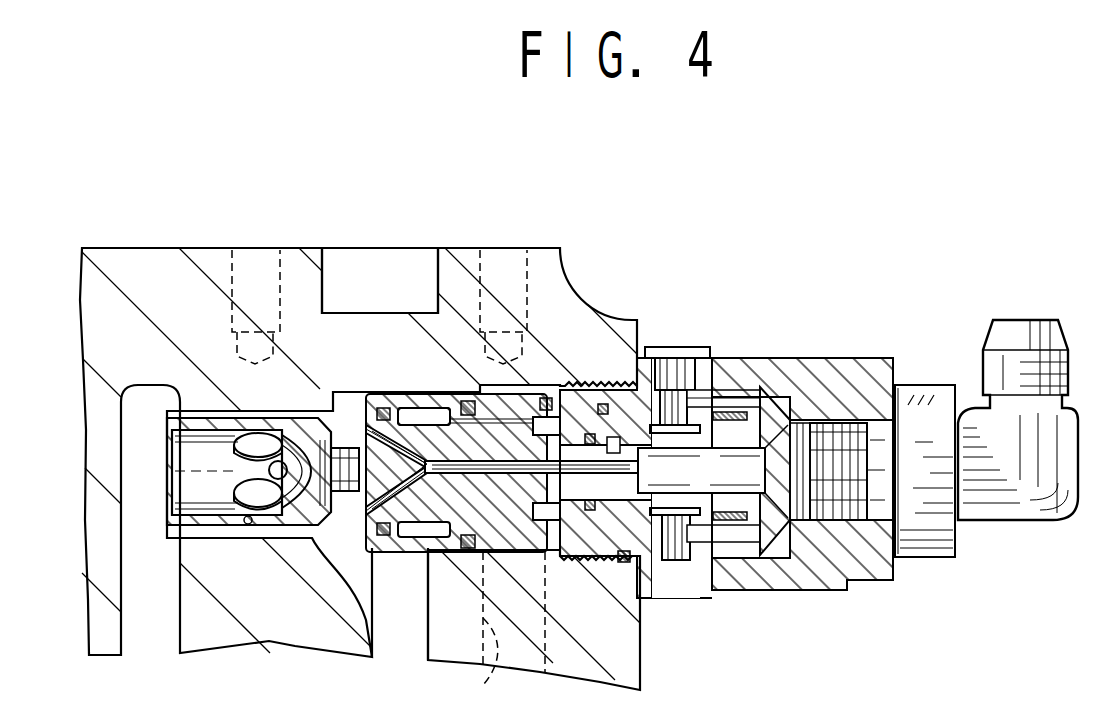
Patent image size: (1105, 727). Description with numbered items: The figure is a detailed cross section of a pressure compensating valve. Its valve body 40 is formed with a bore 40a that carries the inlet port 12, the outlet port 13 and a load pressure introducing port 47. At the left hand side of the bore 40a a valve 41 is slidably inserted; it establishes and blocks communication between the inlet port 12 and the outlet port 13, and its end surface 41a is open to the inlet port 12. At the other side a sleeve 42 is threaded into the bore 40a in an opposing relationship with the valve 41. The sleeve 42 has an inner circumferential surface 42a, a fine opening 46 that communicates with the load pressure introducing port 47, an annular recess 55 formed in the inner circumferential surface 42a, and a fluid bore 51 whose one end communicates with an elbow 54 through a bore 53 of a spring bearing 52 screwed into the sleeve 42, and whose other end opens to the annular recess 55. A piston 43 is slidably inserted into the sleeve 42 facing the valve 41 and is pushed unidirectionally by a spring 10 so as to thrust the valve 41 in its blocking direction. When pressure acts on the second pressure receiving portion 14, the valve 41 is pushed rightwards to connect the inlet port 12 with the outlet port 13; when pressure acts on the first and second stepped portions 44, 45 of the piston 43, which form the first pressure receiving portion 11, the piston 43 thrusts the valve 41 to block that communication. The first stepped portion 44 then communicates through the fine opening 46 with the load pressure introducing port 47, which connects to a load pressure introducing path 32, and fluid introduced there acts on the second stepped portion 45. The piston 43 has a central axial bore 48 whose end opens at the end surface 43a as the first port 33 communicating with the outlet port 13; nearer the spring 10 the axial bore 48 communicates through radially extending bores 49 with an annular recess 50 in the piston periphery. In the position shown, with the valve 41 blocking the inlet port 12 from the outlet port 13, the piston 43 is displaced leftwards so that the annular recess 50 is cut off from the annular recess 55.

The spring 10 is at (760, 493).
The first pressure receiving portion 11 is at (400, 623).
The inlet port 12 is at (122, 431).
The outlet port 13 is at (332, 328).
The second pressure receiving portion 14 is at (227, 558).
The load pressure introducing path 32 is at (484, 664).
The first port 33 is at (380, 328).
The valve body 40 is at (401, 410).
The bore 40a is at (247, 524).
The valve 41 is at (209, 418).
The end surface 41a is at (164, 525).
The sleeve 42 is at (590, 397).
The inner circumferential surface 42a is at (612, 442).
The piston 43 is at (488, 515).
The end surface 43a is at (363, 414).
The first stepped portion 44 is at (531, 503).
The second stepped portion 45 is at (402, 543).
The fine opening 46 is at (553, 388).
The load pressure introducing port 47 is at (502, 390).
The axial bore 48 is at (443, 461).
The radially extending bores 49 is at (597, 540).
The annular recess 50 is at (625, 560).
The fluid bore 51 is at (657, 347).
The spring bearing 52 is at (870, 360).
The bore 53 is at (788, 520).
The elbow 54 is at (1017, 520).
The annular recess 55 is at (684, 357).